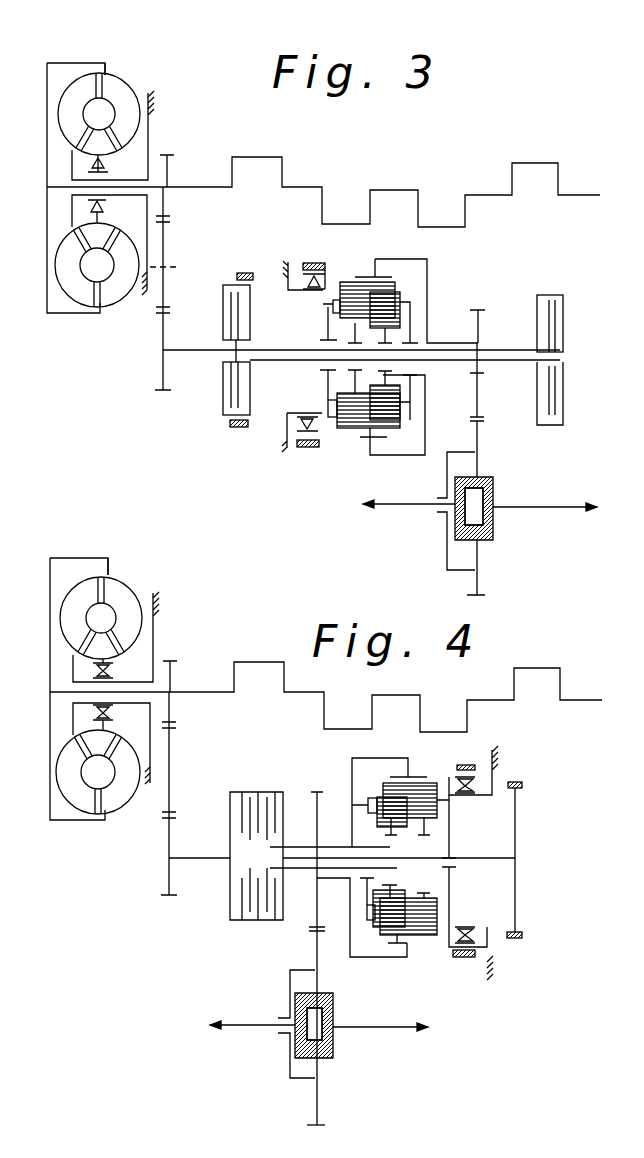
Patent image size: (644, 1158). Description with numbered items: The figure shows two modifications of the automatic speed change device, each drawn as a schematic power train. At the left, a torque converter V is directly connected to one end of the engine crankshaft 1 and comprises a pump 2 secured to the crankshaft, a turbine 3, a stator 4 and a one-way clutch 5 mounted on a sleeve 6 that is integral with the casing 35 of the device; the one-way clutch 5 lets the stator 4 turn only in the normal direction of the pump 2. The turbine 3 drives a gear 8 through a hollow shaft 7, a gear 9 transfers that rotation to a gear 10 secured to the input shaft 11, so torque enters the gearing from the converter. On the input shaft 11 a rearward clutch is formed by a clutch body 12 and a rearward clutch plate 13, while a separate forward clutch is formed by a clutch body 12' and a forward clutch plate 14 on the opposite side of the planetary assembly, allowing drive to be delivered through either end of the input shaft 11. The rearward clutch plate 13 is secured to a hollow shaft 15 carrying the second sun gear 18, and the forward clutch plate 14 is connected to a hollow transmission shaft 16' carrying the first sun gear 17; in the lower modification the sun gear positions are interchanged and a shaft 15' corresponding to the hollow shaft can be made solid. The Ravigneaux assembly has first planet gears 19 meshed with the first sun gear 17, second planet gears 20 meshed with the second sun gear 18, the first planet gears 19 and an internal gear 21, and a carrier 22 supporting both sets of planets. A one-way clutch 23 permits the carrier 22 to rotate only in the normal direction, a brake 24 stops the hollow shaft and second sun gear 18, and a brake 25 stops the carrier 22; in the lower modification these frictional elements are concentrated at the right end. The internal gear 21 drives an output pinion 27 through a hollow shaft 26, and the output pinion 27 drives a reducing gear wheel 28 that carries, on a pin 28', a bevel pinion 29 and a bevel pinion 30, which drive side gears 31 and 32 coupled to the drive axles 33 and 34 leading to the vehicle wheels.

In FIG. 3, the engine crankshaft 1 is at (212, 187).
In FIG. 4, the engine crankshaft 1 is at (210, 692).
In FIG. 3, the pump 2 is at (123, 95).
In FIG. 4, the pump 2 is at (123, 595).
In FIG. 3, the turbine 3 is at (77, 88).
In FIG. 4, the turbine 3 is at (78, 590).
In FIG. 3, the stator 4 is at (90, 147).
In FIG. 4, the stator 4 is at (95, 642).
In FIG. 3, the one-way clutch 5 is at (92, 201).
In FIG. 4, the one-way clutch 5 is at (93, 703).
In FIG. 3, the sleeve 6 is at (132, 176).
In FIG. 4, the sleeve 6 is at (135, 678).
In FIG. 3, the hollow shaft 7 is at (158, 181).
In FIG. 4, the hollow shaft 7 is at (157, 680).
In FIG. 3, the gear 8 is at (170, 206).
In FIG. 4, the gear 8 is at (170, 708).
In FIG. 3, the gear 9 is at (160, 295).
In FIG. 4, the gear 9 is at (167, 798).
In FIG. 3, the gear 10 is at (160, 334).
In FIG. 4, the gear 10 is at (167, 845).
In FIG. 3, the input shaft 11 is at (190, 352).
In FIG. 4, the input shaft 11 is at (190, 858).
In FIG. 3, the clutch body 12 is at (212, 388).
In FIG. 4, the clutch body 12 is at (235, 902).
In FIG. 3, the clutch body 12' is at (577, 323).
In FIG. 3, the rearward clutch plate 13 is at (223, 294).
In FIG. 4, the rearward clutch plate 13 is at (230, 802).
In FIG. 3, the forward clutch plate 14 is at (560, 390).
In FIG. 4, the forward clutch plate 14 is at (279, 812).
In FIG. 3, the hollow shaft 15 is at (391, 329).
In FIG. 4, the shaft 15' is at (333, 897).
In FIG. 3, the transmission shaft 16' is at (506, 311).
In FIG. 4, the transmission shaft 16' is at (348, 802).
In FIG. 3, the first sun gear 17 is at (382, 372).
In FIG. 4, the first sun gear 17 is at (420, 863).
In FIG. 3, the second sun gear 18 is at (420, 385).
In FIG. 4, the second sun gear 18 is at (423, 842).
In FIG. 3, the first planet gears 19 is at (402, 297).
In FIG. 4, the first planet gears 19 is at (383, 790).
In FIG. 3, the second planet gears 20 is at (342, 282).
In FIG. 4, the second planet gears 20 is at (430, 785).
In FIG. 3, the internal gear 21 is at (368, 277).
In FIG. 4, the internal gear 21 is at (418, 777).
In FIG. 3, the carrier 22 is at (328, 394).
In FIG. 4, the carrier 22 is at (447, 805).
In FIG. 3, the one-way clutch 23 is at (304, 272).
In FIG. 4, the one-way clutch 23 is at (473, 938).
In FIG. 3, the brake 24 is at (241, 272).
In FIG. 4, the brake 24 is at (518, 780).
In FIG. 3, the brake 25 is at (318, 263).
In FIG. 4, the brake 25 is at (465, 958).
In FIG. 3, the hollow shaft 26 is at (452, 342).
In FIG. 4, the hollow shaft 26 is at (335, 847).
In FIG. 3, the output pinion 27 is at (480, 390).
In FIG. 4, the output pinion 27 is at (320, 792).
In FIG. 3, the reducing gear wheel 28 is at (507, 447).
In FIG. 4, the reducing gear wheel 28 is at (295, 943).
In FIG. 3, the pin 28' is at (438, 475).
In FIG. 4, the pin 28' is at (327, 988).
In FIG. 3, the bevel pinion 29 is at (492, 479).
In FIG. 4, the bevel pinion 29 is at (333, 1000).
In FIG. 3, the bevel pinion 30 is at (480, 540).
In FIG. 4, the bevel pinion 30 is at (318, 1058).
In FIG. 3, the side gear 31 is at (457, 522).
In FIG. 4, the side gear 31 is at (300, 1040).
In FIG. 3, the side gear 32 is at (493, 518).
In FIG. 4, the side gear 32 is at (333, 1036).
In FIG. 3, the drive axle 33 is at (393, 504).
In FIG. 4, the drive axle 33 is at (240, 1025).
In FIG. 3, the drive axle 34 is at (568, 510).
In FIG. 4, the drive axle 34 is at (397, 1030).
In FIG. 3, the casing 35 is at (153, 97).
In FIG. 4, the casing 35 is at (155, 600).
In FIG. 3, the torque converter V is at (113, 73).
In FIG. 4, the torque converter V is at (113, 573).